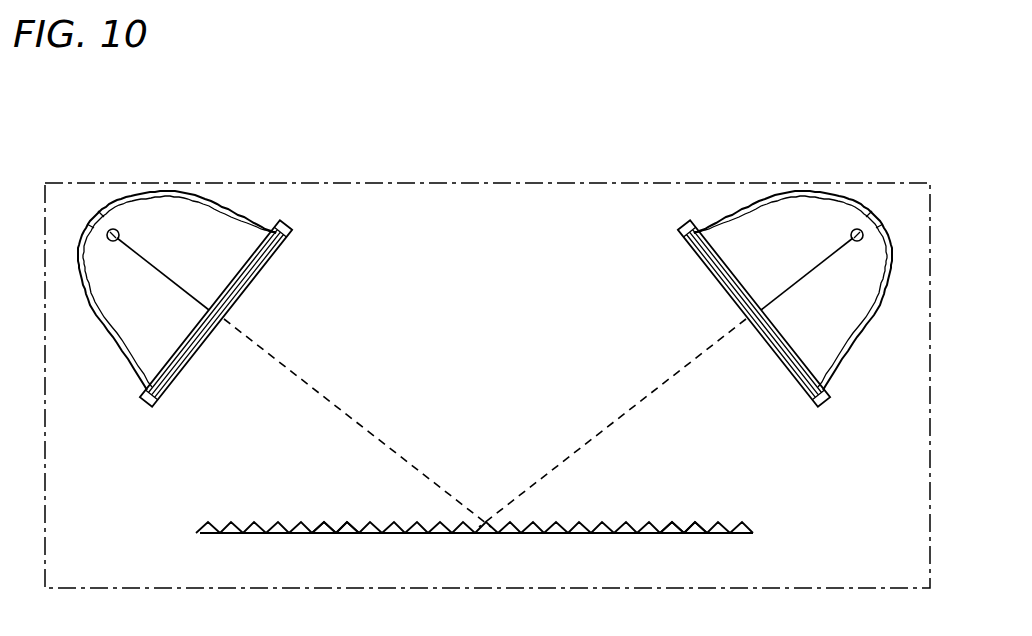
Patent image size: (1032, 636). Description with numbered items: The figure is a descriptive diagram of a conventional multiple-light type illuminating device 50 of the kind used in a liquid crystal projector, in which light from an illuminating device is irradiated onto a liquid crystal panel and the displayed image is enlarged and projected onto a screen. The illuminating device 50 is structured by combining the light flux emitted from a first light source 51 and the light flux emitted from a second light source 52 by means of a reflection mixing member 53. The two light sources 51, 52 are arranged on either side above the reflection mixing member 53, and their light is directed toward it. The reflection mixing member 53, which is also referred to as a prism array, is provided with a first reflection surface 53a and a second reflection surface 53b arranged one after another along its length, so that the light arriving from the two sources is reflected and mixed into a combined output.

The multiple-light type illuminating device 50 is at (186, 183).
The first light source 51 is at (128, 367).
The second light source 52 is at (842, 367).
The reflection mixing member 53 is at (762, 520).
The first reflection surface 53a is at (320, 523).
The second reflection surface 53b is at (332, 523).